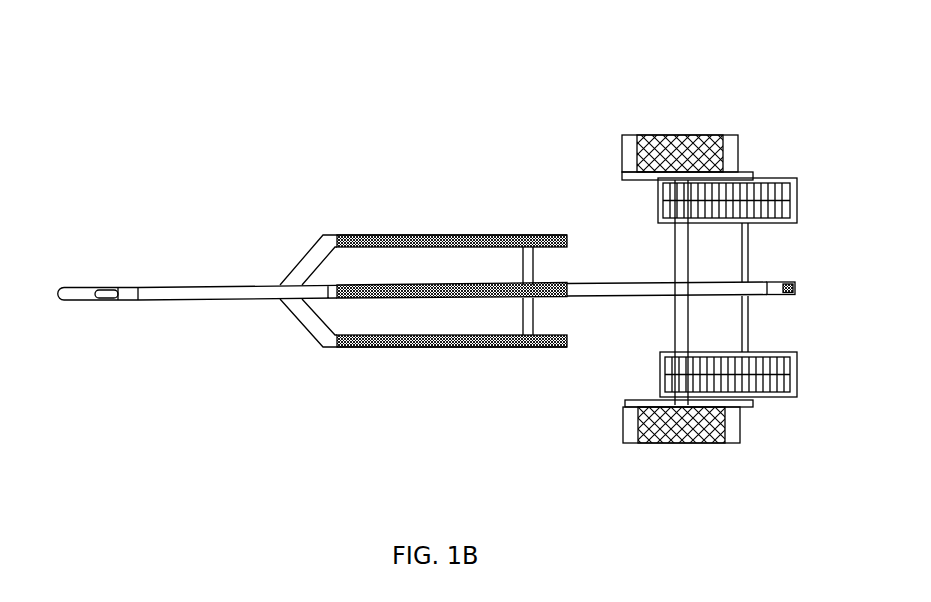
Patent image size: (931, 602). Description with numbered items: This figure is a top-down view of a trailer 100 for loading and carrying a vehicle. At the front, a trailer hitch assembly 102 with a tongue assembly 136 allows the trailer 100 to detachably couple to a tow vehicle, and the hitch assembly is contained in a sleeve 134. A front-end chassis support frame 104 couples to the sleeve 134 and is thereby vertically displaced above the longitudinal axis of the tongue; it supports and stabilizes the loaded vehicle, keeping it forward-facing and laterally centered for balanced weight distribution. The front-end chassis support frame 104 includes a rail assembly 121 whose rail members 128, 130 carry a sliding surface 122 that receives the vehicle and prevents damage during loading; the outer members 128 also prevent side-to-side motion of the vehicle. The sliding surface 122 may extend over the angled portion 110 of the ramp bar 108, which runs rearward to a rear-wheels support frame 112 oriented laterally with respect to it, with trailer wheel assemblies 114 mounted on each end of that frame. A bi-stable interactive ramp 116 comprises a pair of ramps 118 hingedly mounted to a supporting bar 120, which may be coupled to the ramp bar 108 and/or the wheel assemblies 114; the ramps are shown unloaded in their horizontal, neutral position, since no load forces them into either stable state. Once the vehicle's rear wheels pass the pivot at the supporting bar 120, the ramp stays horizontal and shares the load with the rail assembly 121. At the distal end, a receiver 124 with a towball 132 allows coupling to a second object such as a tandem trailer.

The trailer 100 is at (694, 68).
The trailer hitch assembly 102 is at (121, 320).
The front-end chassis support frame 104 is at (268, 252).
The ramp bar 108 is at (623, 282).
The angled portion of ramp bar 110 is at (621, 307).
The rear-wheels support frame 112 is at (673, 268).
The trailer wheel assemblies 114 is at (627, 125).
The bi-stable interactive ramp 116 is at (777, 412).
The ramps 118 is at (755, 177).
The supporting bar 120 is at (748, 342).
The rail assembly 121 is at (511, 204).
The sliding surface 122 is at (438, 212).
The receiver 124 is at (771, 272).
The outer rail members 128 is at (365, 233).
The rail member 130 is at (456, 284).
The towball 132 is at (791, 284).
The sleeve 134 is at (152, 284).
The tongue assembly 136 is at (77, 288).